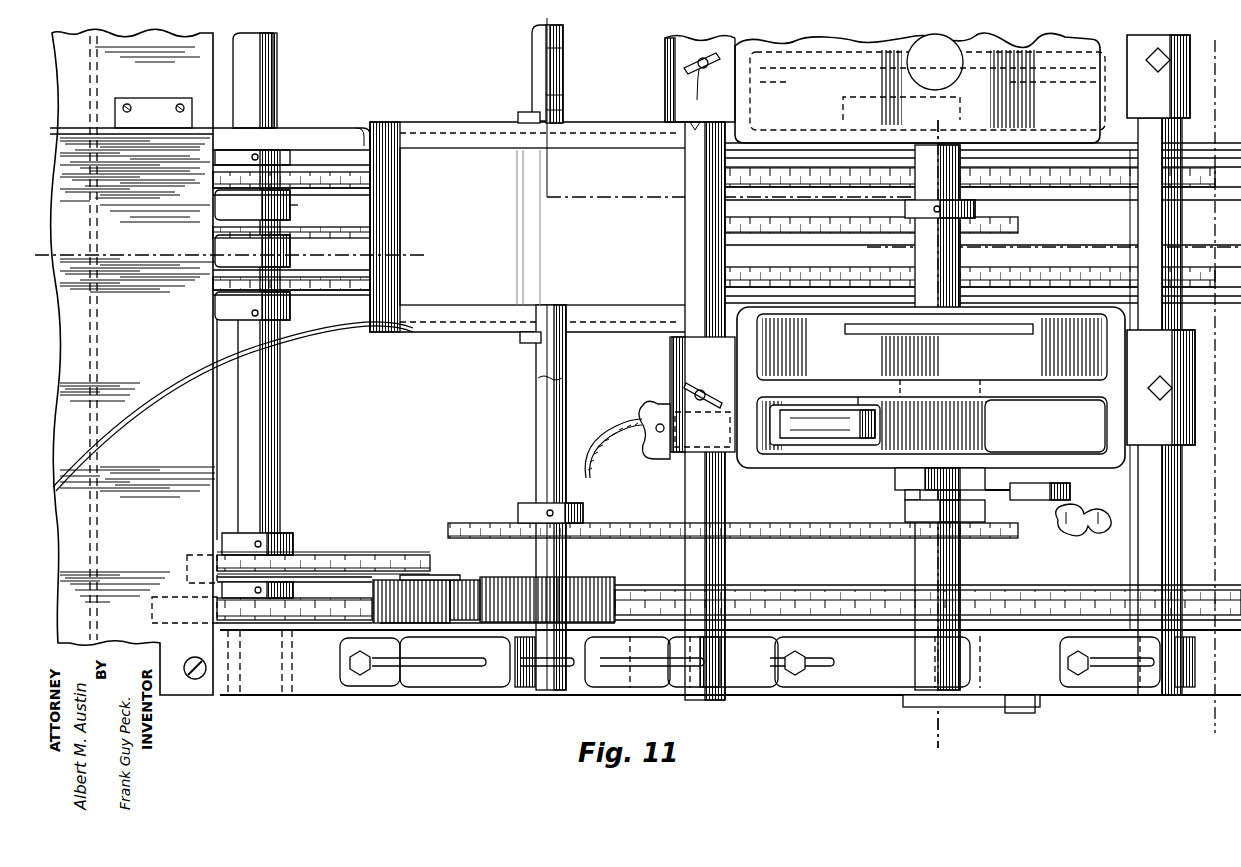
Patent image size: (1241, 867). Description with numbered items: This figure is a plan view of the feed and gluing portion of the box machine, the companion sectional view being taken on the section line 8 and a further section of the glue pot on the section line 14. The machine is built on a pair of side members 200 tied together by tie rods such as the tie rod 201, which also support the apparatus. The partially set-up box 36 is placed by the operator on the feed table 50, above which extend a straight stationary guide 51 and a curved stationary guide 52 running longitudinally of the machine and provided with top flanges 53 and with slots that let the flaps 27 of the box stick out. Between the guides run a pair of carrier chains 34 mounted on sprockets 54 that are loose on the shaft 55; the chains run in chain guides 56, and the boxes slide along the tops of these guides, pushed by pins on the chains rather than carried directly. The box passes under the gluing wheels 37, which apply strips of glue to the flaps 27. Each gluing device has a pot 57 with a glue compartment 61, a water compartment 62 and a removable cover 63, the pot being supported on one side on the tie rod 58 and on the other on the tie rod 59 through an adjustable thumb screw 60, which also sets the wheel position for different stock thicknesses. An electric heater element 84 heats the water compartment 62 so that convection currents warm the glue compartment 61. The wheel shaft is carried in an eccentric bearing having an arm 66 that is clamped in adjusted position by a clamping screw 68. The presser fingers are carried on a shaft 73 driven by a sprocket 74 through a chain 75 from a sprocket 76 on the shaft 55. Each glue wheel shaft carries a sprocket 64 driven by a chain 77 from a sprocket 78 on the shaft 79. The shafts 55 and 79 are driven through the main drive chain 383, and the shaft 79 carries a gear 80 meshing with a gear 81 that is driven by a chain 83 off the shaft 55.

The section line 8- 8 is at (47, 282).
The section line 14- 14 is at (565, 52).
The flaps 27 is at (524, 112).
The carrier chains 34 is at (338, 167).
The partially set-up box 36 is at (364, 128).
The gluing wheels 37 is at (854, 112).
The feed table 50 is at (204, 430).
The straight stationary guide 51 is at (72, 130).
The curved stationary guide 52 is at (120, 430).
The top flanges 53 is at (443, 359).
The sprockets 54 is at (298, 270).
The shaft 55 is at (280, 380).
The chain guides 56 is at (366, 191).
The pot 57 is at (692, 88).
The tie rod 58 is at (1137, 222).
The tie rod 59 is at (705, 133).
The adjustable thumb screw 60 is at (683, 66).
The glue compartment 61 is at (758, 350).
The water compartment 62 is at (844, 456).
The removable cover 63 is at (1046, 45).
The sprocket 64 is at (905, 505).
The arm 66 is at (1010, 500).
The clamping screw 68 is at (1076, 528).
The shaft 73 is at (960, 563).
The sprocket 74 is at (910, 208).
The chain 75 is at (320, 234).
The sprocket 76 is at (307, 213).
The chain 77 is at (794, 531).
The sprocket 78 is at (585, 509).
The shaft 79 is at (566, 74).
The gear 80 is at (600, 580).
The gear 81 is at (372, 583).
The chain 83 is at (340, 557).
The electric heater element 84 is at (813, 450).
The side members 200 is at (838, 692).
The tie rod 201 is at (566, 108).
The main drive chain 383 is at (798, 597).